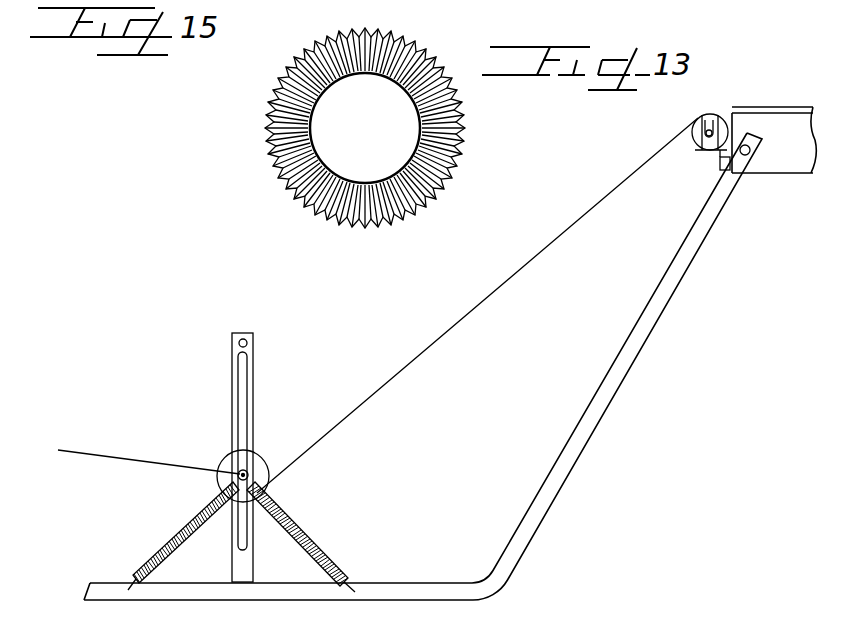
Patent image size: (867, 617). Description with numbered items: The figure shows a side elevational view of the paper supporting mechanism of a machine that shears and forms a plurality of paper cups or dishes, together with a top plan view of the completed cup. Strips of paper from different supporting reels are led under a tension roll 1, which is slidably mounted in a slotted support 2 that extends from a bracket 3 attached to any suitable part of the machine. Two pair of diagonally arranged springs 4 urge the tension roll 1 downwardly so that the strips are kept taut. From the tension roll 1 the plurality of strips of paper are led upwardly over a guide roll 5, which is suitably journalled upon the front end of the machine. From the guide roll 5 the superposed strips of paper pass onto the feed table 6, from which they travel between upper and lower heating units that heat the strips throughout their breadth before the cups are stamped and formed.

The tension roll 1 is at (260, 463).
The slotted support 2 is at (238, 567).
The bracket 3 is at (532, 543).
The springs 4 is at (330, 558).
The guide roll 5 is at (695, 147).
The feed table 6 is at (757, 117).